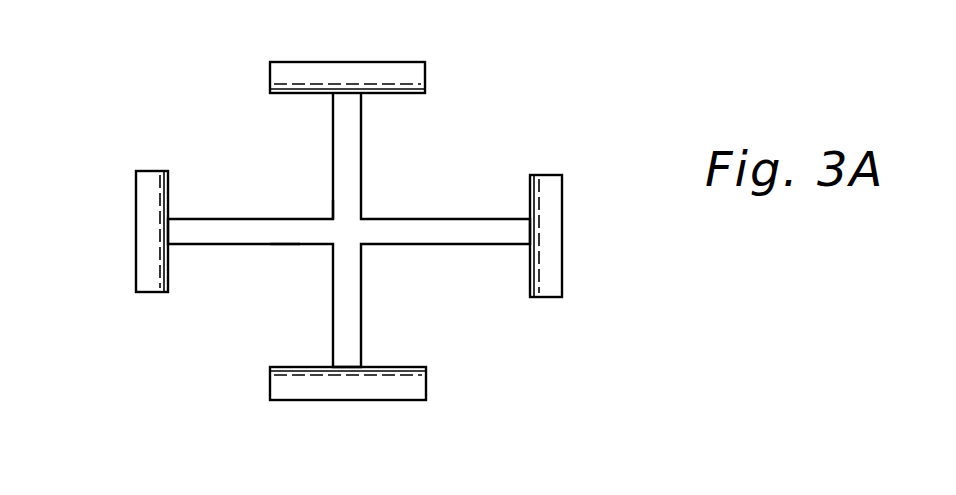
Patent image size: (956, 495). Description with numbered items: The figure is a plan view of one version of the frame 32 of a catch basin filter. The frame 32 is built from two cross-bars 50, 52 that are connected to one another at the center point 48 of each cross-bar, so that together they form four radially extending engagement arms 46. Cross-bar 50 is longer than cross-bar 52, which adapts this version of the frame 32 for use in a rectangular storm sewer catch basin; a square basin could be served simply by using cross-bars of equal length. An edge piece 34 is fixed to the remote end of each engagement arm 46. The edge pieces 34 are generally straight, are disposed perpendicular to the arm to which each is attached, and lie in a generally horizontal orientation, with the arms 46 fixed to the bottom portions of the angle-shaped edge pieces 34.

The frame 32 is at (349, 230).
The edge pieces 34 is at (385, 71).
The engagement arms 46 is at (333, 128).
The center point 48 is at (345, 235).
The cross-bar 50 is at (285, 244).
The cross-bar 52 is at (333, 187).